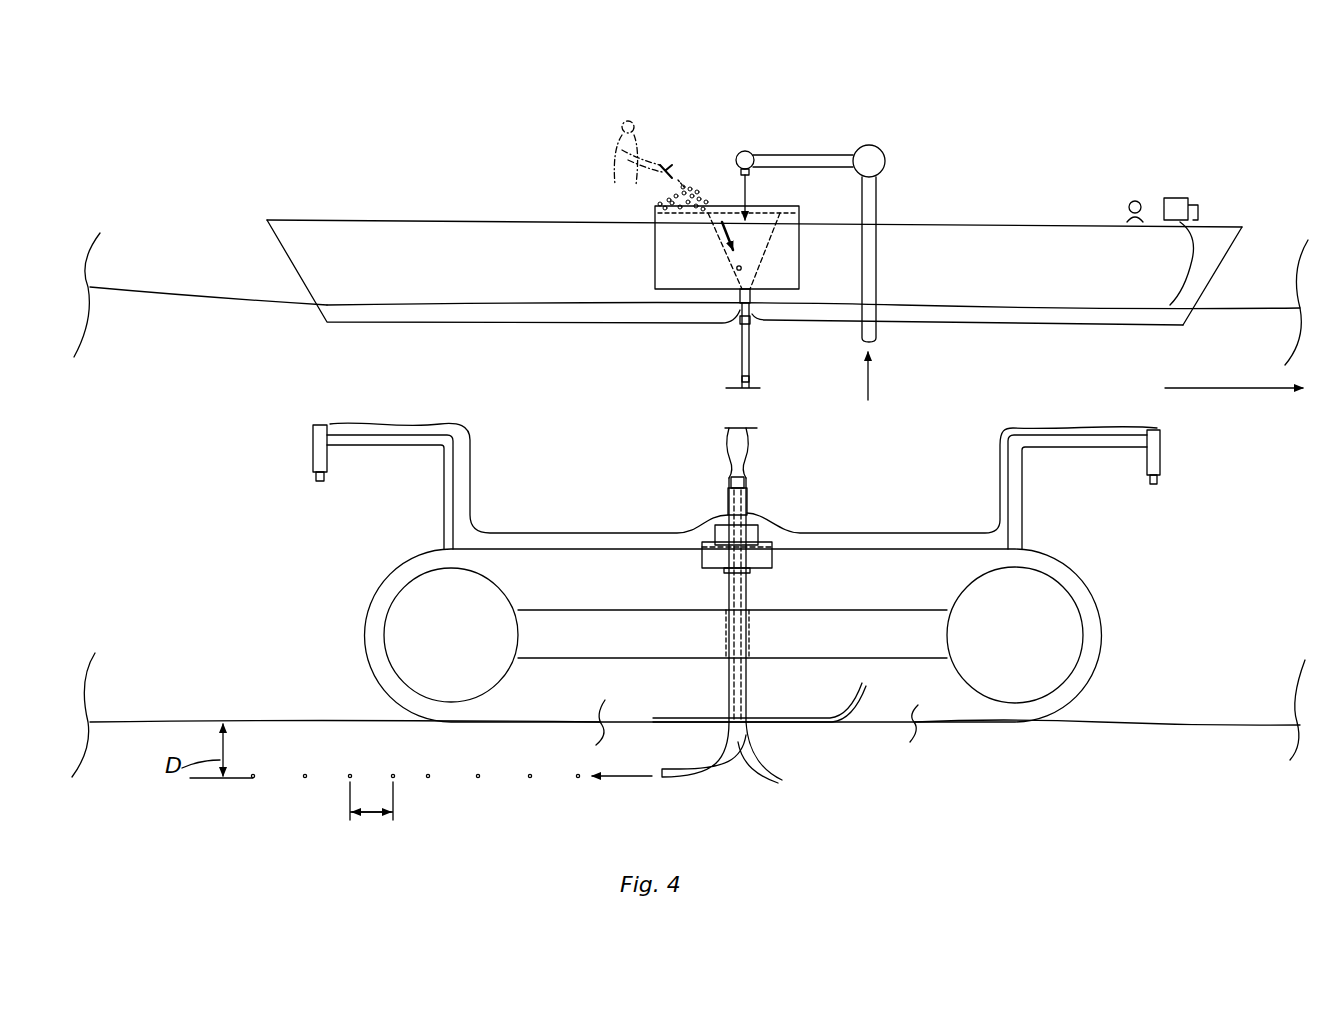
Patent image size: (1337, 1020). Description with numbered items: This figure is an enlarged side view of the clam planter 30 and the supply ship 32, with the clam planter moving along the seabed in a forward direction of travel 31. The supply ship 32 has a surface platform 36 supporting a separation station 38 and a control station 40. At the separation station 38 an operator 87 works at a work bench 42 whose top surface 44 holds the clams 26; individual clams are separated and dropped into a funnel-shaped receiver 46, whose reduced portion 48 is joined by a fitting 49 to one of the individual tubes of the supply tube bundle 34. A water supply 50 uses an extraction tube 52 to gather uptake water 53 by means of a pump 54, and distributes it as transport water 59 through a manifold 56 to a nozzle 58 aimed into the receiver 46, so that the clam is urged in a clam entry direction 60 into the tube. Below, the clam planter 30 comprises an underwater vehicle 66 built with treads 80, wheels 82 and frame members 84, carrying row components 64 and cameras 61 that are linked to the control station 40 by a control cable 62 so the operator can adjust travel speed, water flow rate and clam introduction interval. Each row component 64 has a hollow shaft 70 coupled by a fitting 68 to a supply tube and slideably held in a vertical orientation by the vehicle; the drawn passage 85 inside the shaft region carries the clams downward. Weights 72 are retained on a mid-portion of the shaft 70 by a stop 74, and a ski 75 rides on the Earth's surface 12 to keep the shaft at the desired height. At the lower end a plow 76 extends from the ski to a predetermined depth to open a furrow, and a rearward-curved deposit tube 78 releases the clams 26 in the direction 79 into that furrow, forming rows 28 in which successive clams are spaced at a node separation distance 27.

The Earth's surface 12 is at (133, 720).
The clams 26 is at (680, 183).
The node separation distance 27 is at (372, 816).
The rows 28 is at (283, 796).
The clam planter 30 is at (212, 472).
The forward direction of travel 31 is at (1180, 388).
The supply ship 32 is at (277, 112).
The supply tube bundle 34 is at (745, 380).
The surface platform 36 is at (290, 219).
The separation station 38 is at (805, 108).
The control station 40 is at (1192, 133).
The work bench 42 is at (628, 214).
The top surface 44 is at (790, 207).
The receivers 46 is at (765, 252).
The reduced portion 48 is at (757, 298).
The fitting 49 is at (740, 318).
The water supply 50 is at (915, 192).
The extraction tube 52 is at (876, 280).
The uptake water 53 is at (874, 390).
The pump 54 is at (880, 147).
The manifold 56 is at (745, 150).
The nozzles 58 is at (737, 164).
The transport water 59 is at (752, 193).
The clam entry direction 60 is at (718, 232).
The cameras 61 is at (318, 427).
The control cable 62 is at (512, 530).
The row components 64 is at (705, 497).
The underwater vehicle 66 is at (794, 633).
The fitting 68 is at (733, 480).
The shaft 70 is at (750, 490).
The weights 72 is at (765, 540).
The stop 74 is at (750, 568).
The ski 75 is at (705, 718).
The plow 76 is at (758, 758).
The deposit tube 78 is at (705, 770).
The discharge direction 79 is at (635, 780).
The treads 80 is at (1105, 640).
The wheels 82 is at (505, 590).
The frame members 84 is at (622, 608).
The tube passage 85 is at (724, 632).
The operator 87 is at (622, 128).